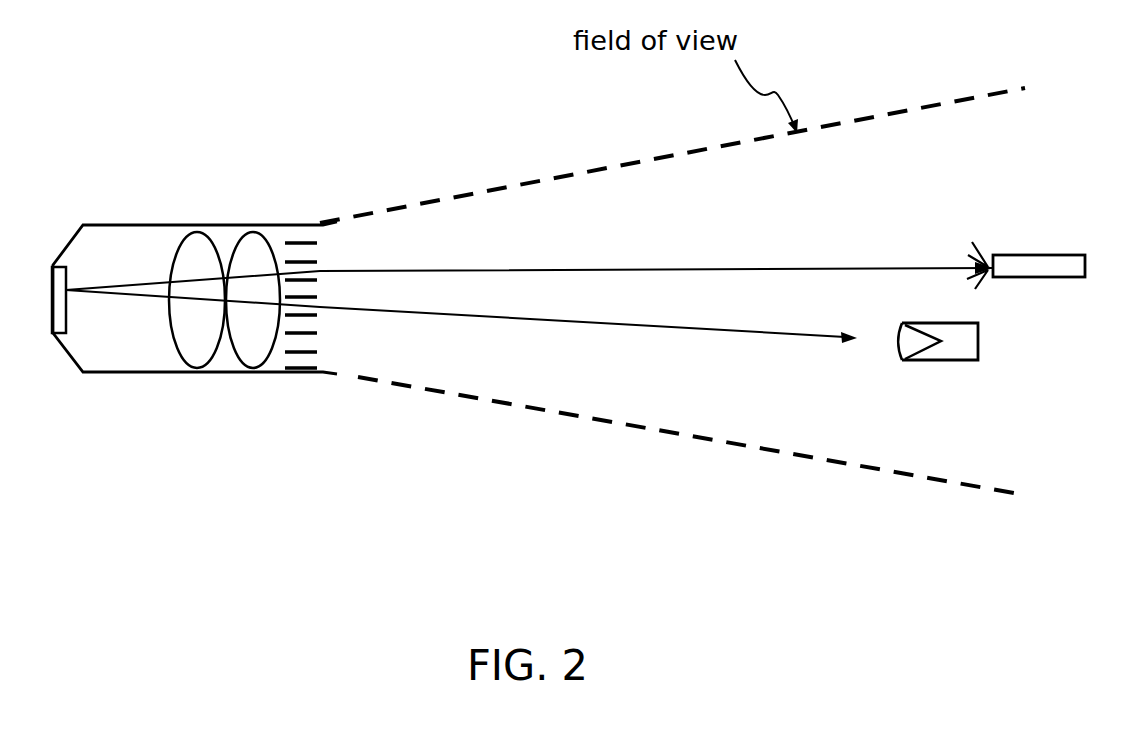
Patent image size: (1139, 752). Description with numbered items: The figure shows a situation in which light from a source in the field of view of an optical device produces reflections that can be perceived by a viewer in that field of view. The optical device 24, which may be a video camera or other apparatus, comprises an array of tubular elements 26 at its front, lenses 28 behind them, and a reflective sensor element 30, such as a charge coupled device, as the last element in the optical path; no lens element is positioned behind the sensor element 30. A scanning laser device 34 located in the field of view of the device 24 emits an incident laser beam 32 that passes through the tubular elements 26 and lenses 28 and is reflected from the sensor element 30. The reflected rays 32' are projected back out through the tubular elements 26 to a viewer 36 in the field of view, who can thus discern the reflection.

The optical device 24 is at (130, 382).
The array of tubular elements 26 is at (317, 323).
The lenses 28 is at (197, 232).
The reflective sensor element 30 is at (82, 268).
The incident laser beam 32 is at (529, 256).
The reflected rays 32' is at (461, 344).
The scanning laser device 34 is at (1015, 255).
The viewer 36 is at (957, 347).